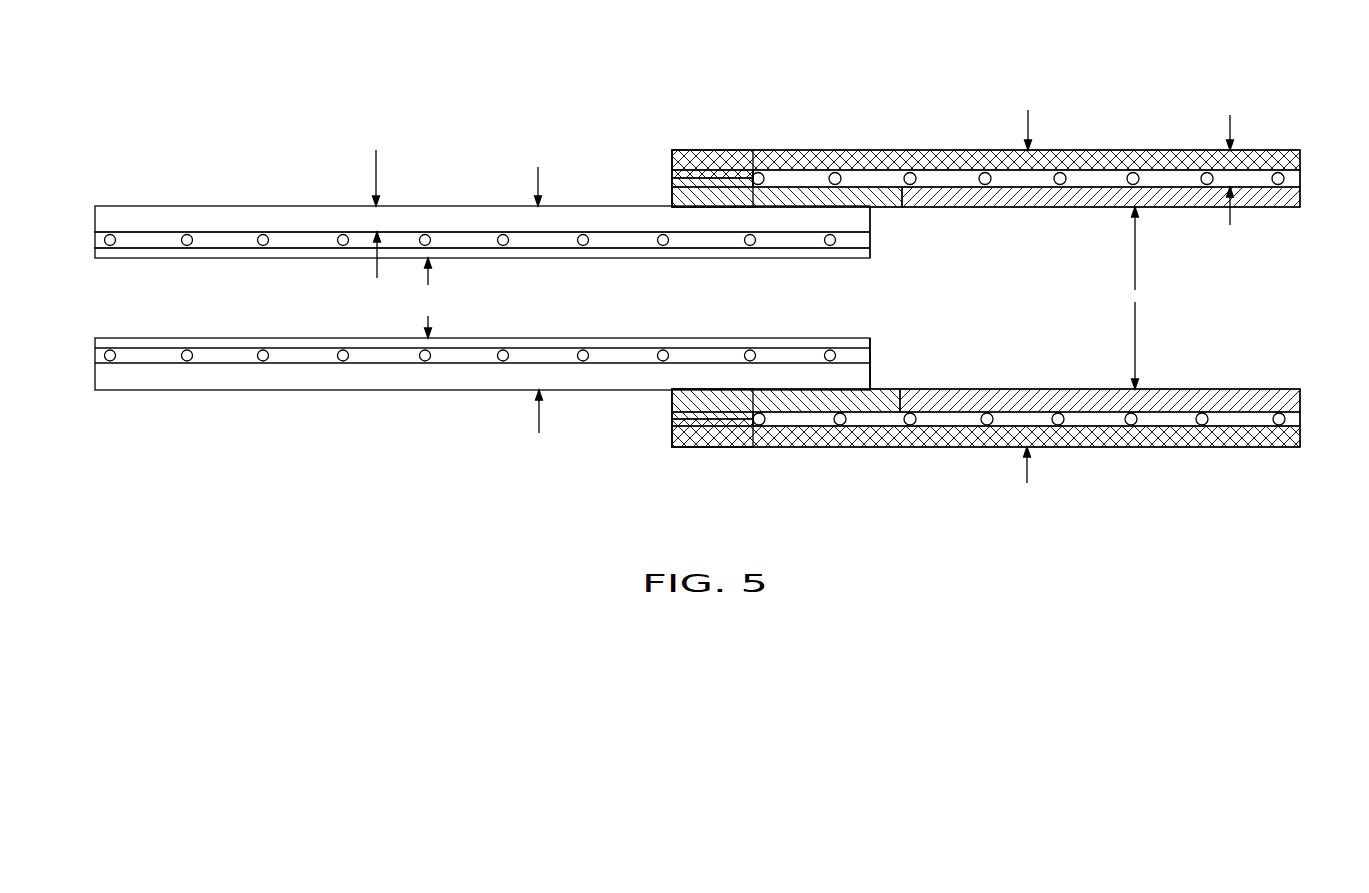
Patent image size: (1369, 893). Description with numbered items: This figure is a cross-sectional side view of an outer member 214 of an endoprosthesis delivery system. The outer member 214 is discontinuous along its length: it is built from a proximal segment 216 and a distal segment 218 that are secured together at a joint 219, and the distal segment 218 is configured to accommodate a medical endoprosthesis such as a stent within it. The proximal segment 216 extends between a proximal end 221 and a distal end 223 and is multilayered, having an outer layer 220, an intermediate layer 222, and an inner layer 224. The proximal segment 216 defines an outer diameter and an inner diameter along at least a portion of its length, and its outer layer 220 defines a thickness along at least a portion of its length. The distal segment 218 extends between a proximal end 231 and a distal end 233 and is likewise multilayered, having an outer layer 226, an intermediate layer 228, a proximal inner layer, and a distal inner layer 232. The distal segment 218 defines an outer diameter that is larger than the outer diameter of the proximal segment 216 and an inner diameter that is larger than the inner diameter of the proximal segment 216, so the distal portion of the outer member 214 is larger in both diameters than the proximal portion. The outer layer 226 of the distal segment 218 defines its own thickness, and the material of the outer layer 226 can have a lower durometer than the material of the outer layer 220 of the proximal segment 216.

The outer member 214 is at (700, 264).
The proximal segment 216 is at (453, 224).
The distal segment 218 is at (975, 173).
The joint 219 is at (884, 216).
The outer layer 220 is at (128, 220).
The proximal end 221 is at (95, 365).
The intermediate layer 222 is at (96, 238).
The distal end 223 is at (872, 368).
The inner layer 224 is at (177, 258).
The outer layer 226 is at (1300, 160).
The intermediate layer 228 is at (1300, 178).
The proximal end 231 is at (960, 448).
The distal inner layer 232 is at (1300, 195).
The distal end 233 is at (1300, 422).